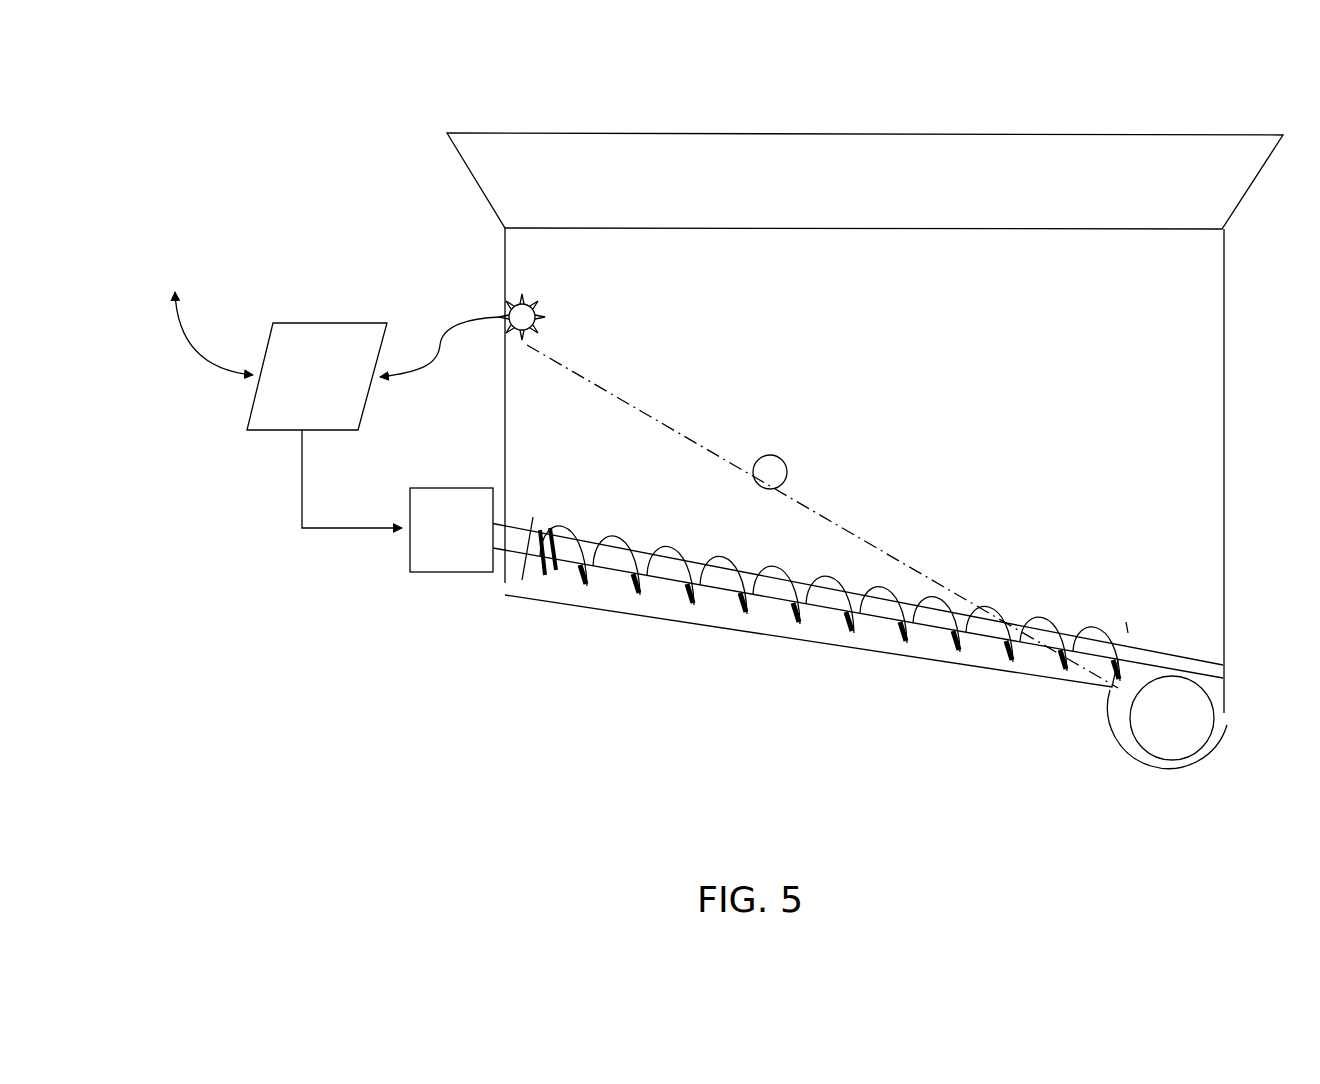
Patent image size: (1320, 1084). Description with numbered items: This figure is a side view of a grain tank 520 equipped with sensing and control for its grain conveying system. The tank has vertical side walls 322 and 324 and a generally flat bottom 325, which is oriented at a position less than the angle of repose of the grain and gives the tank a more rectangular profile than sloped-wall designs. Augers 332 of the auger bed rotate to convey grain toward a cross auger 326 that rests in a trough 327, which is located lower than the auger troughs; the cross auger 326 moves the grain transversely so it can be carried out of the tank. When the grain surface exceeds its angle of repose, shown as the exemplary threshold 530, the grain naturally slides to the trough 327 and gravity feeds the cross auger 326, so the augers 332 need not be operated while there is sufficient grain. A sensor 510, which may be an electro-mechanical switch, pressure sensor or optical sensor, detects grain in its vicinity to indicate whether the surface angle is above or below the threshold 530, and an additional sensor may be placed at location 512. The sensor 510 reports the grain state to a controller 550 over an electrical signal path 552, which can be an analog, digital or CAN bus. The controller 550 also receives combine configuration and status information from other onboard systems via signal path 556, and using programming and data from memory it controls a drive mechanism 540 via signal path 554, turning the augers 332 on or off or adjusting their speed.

The vertical side wall 322 is at (505, 252).
The vertical side wall 324 is at (1225, 440).
The generally flat bottom 325 is at (717, 632).
The cross auger 326 is at (1177, 725).
The trough 327 is at (1157, 772).
The auger 332 is at (668, 572).
The sensor 510 is at (505, 305).
The sensor location 512 is at (787, 465).
The grain tank 520 is at (858, 316).
The threshold 530 is at (652, 412).
The drive mechanism 540 is at (420, 558).
The controller 550 is at (268, 405).
The electrical signal path 552 is at (443, 330).
The signal path 554 is at (302, 530).
The signal path 556 is at (195, 350).